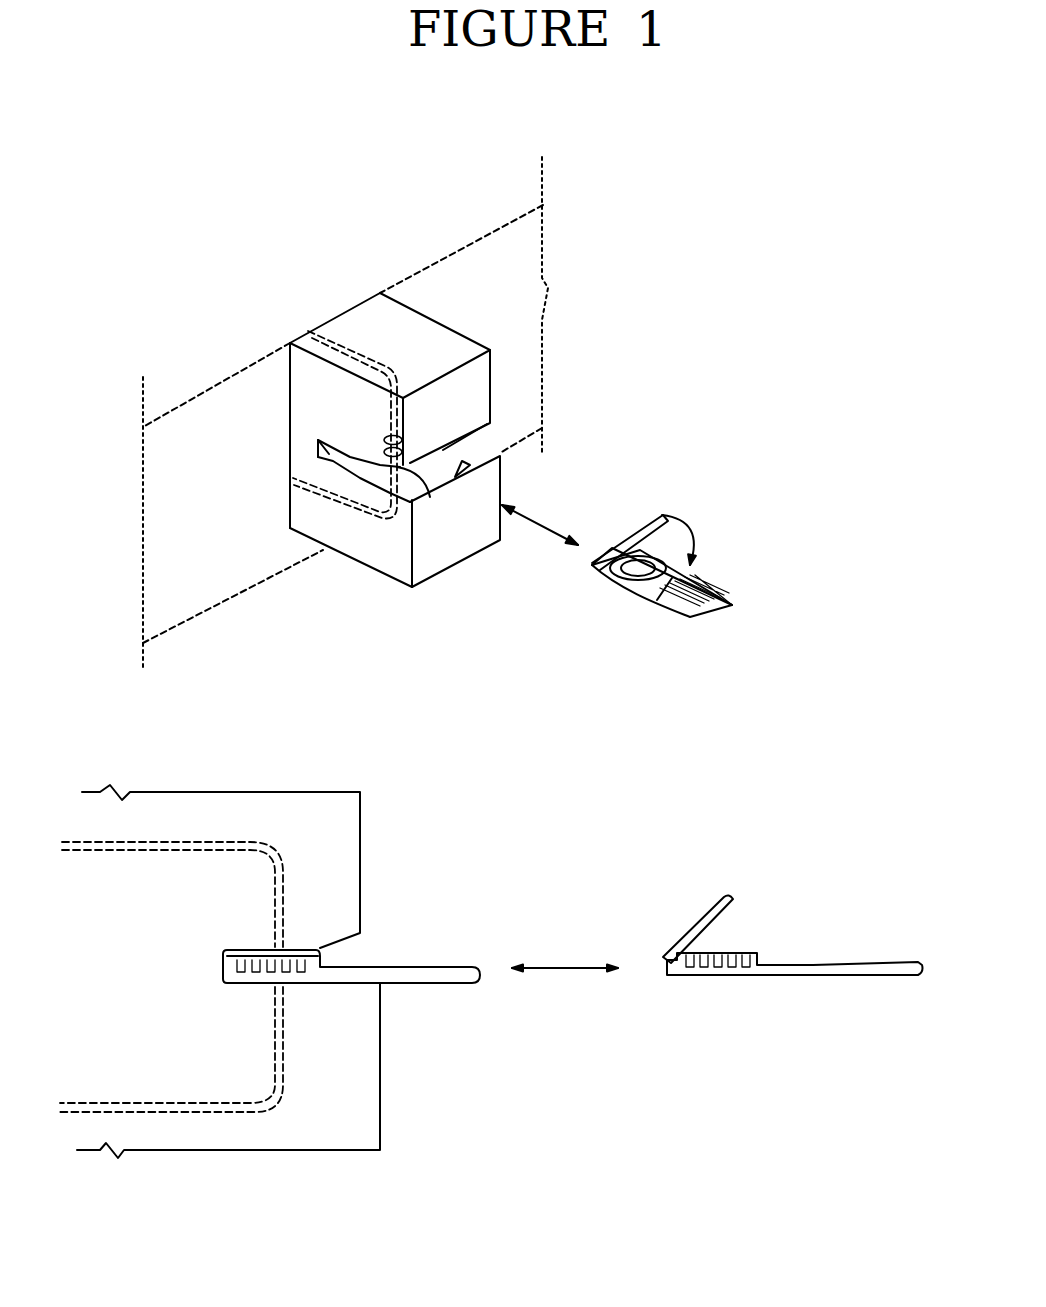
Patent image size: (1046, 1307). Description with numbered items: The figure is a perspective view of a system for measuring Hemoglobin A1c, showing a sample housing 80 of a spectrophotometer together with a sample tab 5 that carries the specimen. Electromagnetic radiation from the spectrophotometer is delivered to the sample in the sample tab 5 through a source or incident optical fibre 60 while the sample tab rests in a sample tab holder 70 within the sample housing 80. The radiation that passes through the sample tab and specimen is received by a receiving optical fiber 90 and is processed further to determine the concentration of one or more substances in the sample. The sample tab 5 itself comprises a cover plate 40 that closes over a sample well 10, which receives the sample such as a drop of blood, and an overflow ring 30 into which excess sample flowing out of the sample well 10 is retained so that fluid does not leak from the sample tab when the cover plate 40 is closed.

The sample tab 5 is at (720, 570).
The sample well 10 is at (722, 950).
The overflow ring 30 is at (747, 955).
The cover plate 40 is at (690, 920).
The incident optical fibre 60 is at (253, 1118).
The sample tab holder 70 is at (500, 452).
The sample housing 80 is at (373, 582).
The receiving optical fiber 90 is at (288, 857).